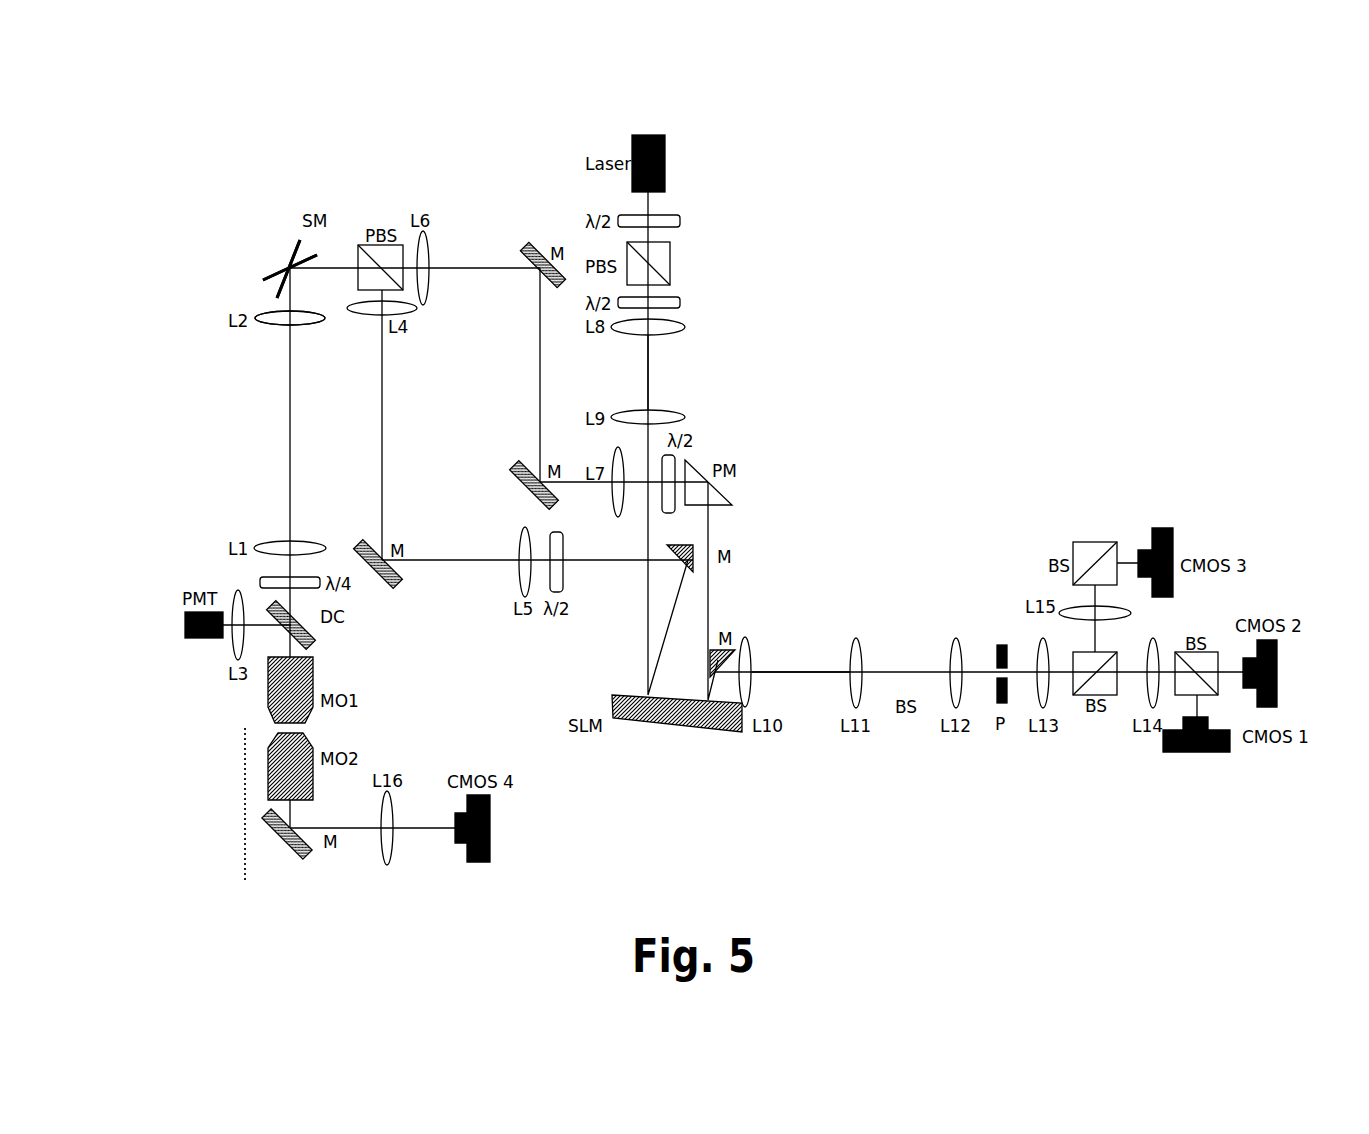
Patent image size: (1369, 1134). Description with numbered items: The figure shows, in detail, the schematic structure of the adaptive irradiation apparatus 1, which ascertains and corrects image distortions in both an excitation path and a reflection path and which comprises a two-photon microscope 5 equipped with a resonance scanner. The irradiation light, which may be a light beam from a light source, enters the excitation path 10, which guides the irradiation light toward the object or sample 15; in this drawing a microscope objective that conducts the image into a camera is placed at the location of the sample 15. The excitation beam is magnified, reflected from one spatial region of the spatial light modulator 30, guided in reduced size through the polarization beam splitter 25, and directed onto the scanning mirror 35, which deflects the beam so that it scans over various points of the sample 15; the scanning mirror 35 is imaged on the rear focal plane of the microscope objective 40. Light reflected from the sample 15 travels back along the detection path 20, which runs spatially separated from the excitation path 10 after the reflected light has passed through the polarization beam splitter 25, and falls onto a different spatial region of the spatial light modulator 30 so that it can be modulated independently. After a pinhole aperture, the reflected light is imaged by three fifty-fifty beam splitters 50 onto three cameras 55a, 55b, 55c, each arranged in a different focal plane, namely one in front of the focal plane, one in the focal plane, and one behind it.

The adaptive irradiation apparatus 1 is at (717, 143).
The microscope 5 is at (200, 195).
The excitation path 10 is at (663, 360).
The object/sample 15 is at (220, 732).
The detection path 20 is at (787, 662).
The polarization beam splitter 25 is at (385, 215).
The spatial light modulator 30 is at (663, 747).
The scanning mirror 35 is at (237, 265).
The microscope objective 40 is at (262, 693).
The 50/50 beam splitter 50 is at (1077, 537).
The camera 55a is at (1202, 756).
The camera 55b is at (1294, 673).
The camera 55c is at (1189, 544).